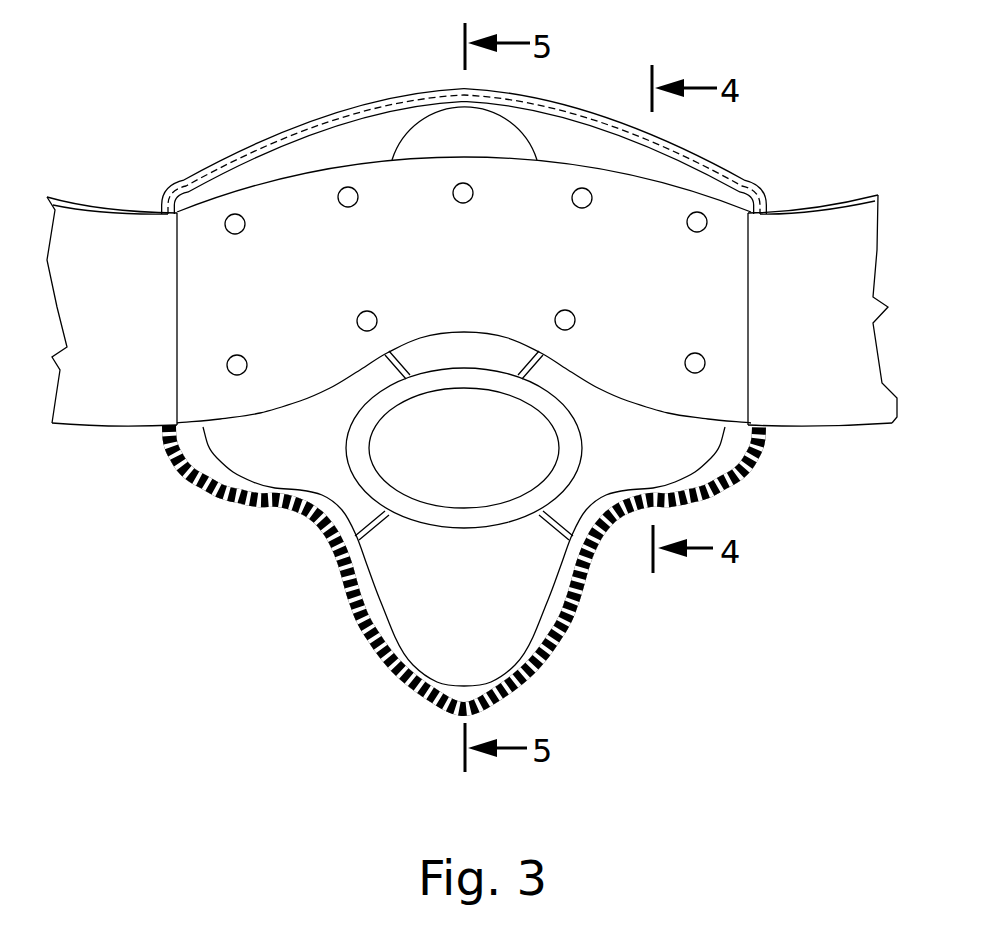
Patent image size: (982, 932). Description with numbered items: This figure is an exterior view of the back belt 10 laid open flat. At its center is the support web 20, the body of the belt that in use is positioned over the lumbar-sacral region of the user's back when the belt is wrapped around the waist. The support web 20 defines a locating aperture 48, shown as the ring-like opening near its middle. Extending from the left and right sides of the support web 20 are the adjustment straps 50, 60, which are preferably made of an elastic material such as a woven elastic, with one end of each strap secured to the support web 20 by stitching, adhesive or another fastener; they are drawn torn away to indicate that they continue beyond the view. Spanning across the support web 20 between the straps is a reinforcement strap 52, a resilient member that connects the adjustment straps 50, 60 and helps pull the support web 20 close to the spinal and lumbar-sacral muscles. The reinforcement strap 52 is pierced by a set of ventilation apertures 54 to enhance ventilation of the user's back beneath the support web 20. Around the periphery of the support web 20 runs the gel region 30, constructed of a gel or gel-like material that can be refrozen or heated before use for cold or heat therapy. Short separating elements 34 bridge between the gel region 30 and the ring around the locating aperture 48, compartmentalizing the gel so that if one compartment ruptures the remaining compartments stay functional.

The back belt 10 is at (257, 72).
The support web 20 is at (557, 122).
The gel region 30 is at (527, 627).
The separating elements 34 is at (390, 362).
The locating aperture 48 is at (478, 447).
The adjustment strap 50 is at (132, 228).
The reinforcement strap 52 is at (268, 195).
The ventilation apertures 54 is at (350, 194).
The adjustment strap 60 is at (783, 245).